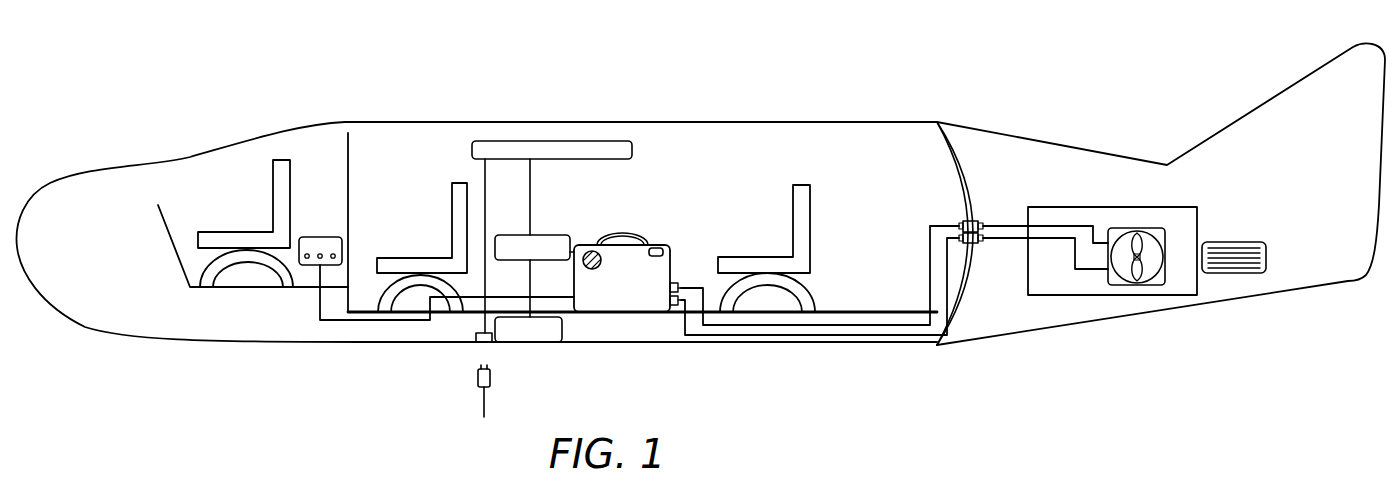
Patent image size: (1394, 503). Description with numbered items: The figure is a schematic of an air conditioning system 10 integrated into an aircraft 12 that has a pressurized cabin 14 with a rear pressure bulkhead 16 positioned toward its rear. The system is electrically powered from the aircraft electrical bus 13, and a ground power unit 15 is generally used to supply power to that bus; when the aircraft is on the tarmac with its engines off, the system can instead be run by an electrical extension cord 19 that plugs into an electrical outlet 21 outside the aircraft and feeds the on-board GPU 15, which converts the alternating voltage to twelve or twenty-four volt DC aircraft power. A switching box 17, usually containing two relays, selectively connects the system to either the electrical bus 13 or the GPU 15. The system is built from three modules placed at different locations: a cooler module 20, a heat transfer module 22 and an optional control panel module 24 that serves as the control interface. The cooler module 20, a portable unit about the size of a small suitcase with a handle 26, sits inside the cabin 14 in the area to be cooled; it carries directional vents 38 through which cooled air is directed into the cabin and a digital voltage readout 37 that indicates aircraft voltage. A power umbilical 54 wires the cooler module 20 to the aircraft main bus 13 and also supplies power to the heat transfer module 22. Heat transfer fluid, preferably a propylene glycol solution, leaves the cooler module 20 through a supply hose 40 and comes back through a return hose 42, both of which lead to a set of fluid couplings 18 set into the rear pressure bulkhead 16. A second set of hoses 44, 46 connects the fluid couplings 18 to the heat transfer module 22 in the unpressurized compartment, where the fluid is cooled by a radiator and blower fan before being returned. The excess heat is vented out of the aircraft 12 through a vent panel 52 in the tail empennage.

The air conditioning system 10 is at (653, 87).
The aircraft 12 is at (1012, 137).
The aircraft electrical bus 13 is at (632, 150).
The pressurized cabin 14 is at (410, 148).
The ground power unit (GPU) 15 is at (550, 337).
The rear pressure bulkhead 16 is at (960, 313).
The switching box 17 is at (517, 235).
The fluid couplings 18 is at (965, 219).
The electrical extension cord 19 is at (482, 398).
The cooler module 20 is at (657, 267).
The electrical outlet 21 is at (483, 343).
The heat transfer module 22 is at (1170, 207).
The control panel module 24 is at (323, 237).
The handle 26 is at (627, 233).
The digital voltage readout 37 is at (658, 245).
The directional vents 38 is at (587, 252).
The supply hose 40 is at (927, 240).
The return hose 42 is at (947, 282).
The supply hose (second set) 44 is at (1005, 225).
The return hose (second set) 46 is at (1012, 243).
The vent panel 52 is at (1252, 240).
The power umbilical 54 is at (383, 322).